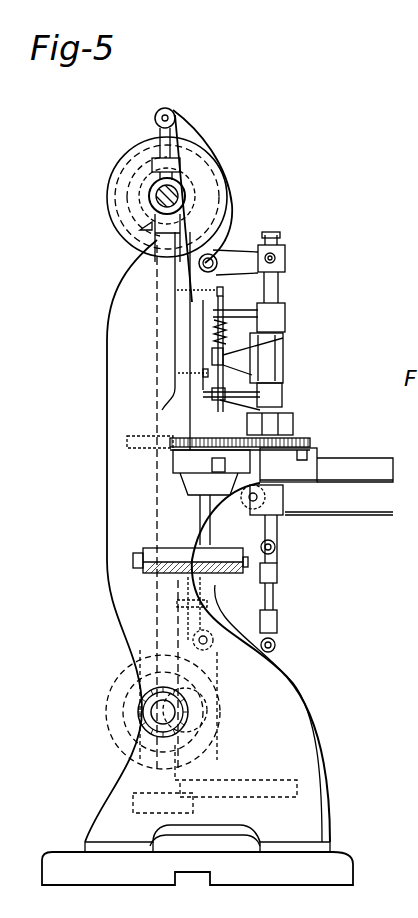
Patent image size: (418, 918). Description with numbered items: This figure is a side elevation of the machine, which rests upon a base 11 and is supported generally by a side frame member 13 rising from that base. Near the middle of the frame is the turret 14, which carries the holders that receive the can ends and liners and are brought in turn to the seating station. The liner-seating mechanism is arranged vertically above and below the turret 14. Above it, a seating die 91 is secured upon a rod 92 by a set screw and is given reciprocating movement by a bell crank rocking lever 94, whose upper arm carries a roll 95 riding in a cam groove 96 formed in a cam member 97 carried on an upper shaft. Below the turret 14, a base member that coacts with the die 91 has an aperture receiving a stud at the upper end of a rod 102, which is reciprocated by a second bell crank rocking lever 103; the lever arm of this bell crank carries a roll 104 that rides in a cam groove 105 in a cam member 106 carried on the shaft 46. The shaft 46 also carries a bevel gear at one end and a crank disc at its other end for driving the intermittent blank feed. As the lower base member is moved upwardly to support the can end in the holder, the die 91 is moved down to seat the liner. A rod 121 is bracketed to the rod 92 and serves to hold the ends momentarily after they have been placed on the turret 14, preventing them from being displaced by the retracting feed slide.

The base 11 is at (338, 863).
The side frame member 13 is at (314, 742).
The turret 14 is at (308, 440).
The shaft 46 is at (160, 712).
The seating die 91 is at (285, 420).
The rod 92 is at (283, 370).
The bell crank rocking lever 94 is at (227, 257).
The roll 95 is at (200, 190).
The cam groove 96 is at (130, 163).
The cam member 97 is at (203, 152).
The rod 102 is at (280, 532).
The bell crank rocking lever 103 is at (273, 660).
The roll 104 is at (203, 703).
The cam groove 105 is at (120, 710).
The cam member 106 is at (122, 680).
The rod 121 is at (215, 405).